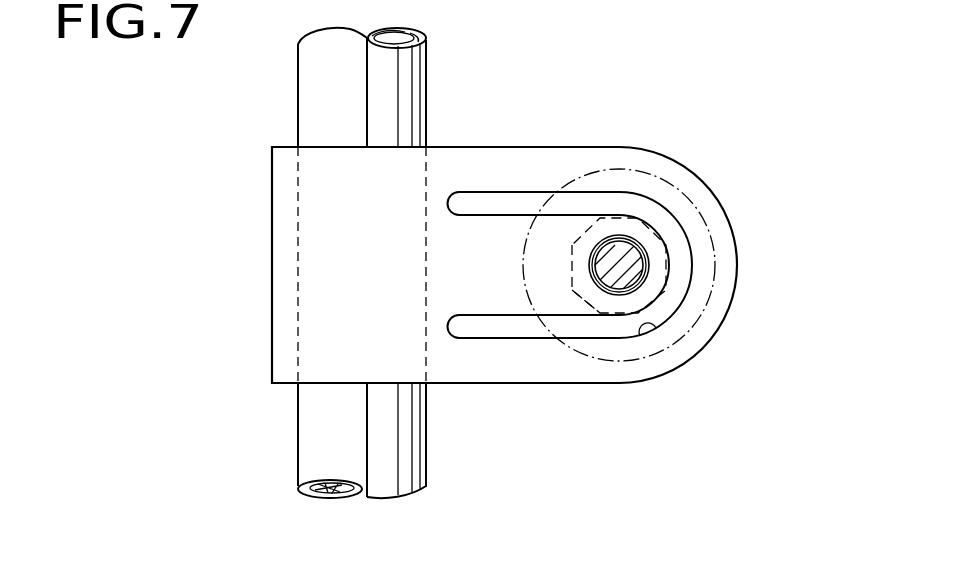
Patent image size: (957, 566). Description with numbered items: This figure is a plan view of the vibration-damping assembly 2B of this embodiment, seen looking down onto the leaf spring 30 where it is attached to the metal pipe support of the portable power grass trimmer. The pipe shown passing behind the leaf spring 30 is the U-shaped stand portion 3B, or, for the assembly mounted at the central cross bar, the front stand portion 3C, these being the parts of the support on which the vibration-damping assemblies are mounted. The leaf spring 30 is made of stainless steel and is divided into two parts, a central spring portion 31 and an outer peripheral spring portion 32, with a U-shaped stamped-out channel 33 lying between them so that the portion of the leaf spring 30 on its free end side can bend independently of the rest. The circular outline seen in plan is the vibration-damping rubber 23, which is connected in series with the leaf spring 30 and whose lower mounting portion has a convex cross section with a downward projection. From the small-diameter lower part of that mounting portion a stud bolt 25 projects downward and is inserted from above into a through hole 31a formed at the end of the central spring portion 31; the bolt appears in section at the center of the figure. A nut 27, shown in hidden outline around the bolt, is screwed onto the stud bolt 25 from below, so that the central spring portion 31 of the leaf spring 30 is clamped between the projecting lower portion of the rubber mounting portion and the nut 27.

The vibration-damping assembly 2B is at (557, 249).
The stand portion 3B is at (448, 264).
The front stand portion 3C is at (419, 462).
The vibration-damping rubber 23 is at (715, 238).
The stud bolt 25 is at (618, 297).
The nut 27 is at (588, 308).
The leaf spring 30 is at (510, 144).
The central spring portion 31 is at (683, 194).
The through hole 31a is at (644, 272).
The outer peripheral spring portion 32 is at (638, 153).
The U-shaped stamped-out channel 33 is at (658, 326).